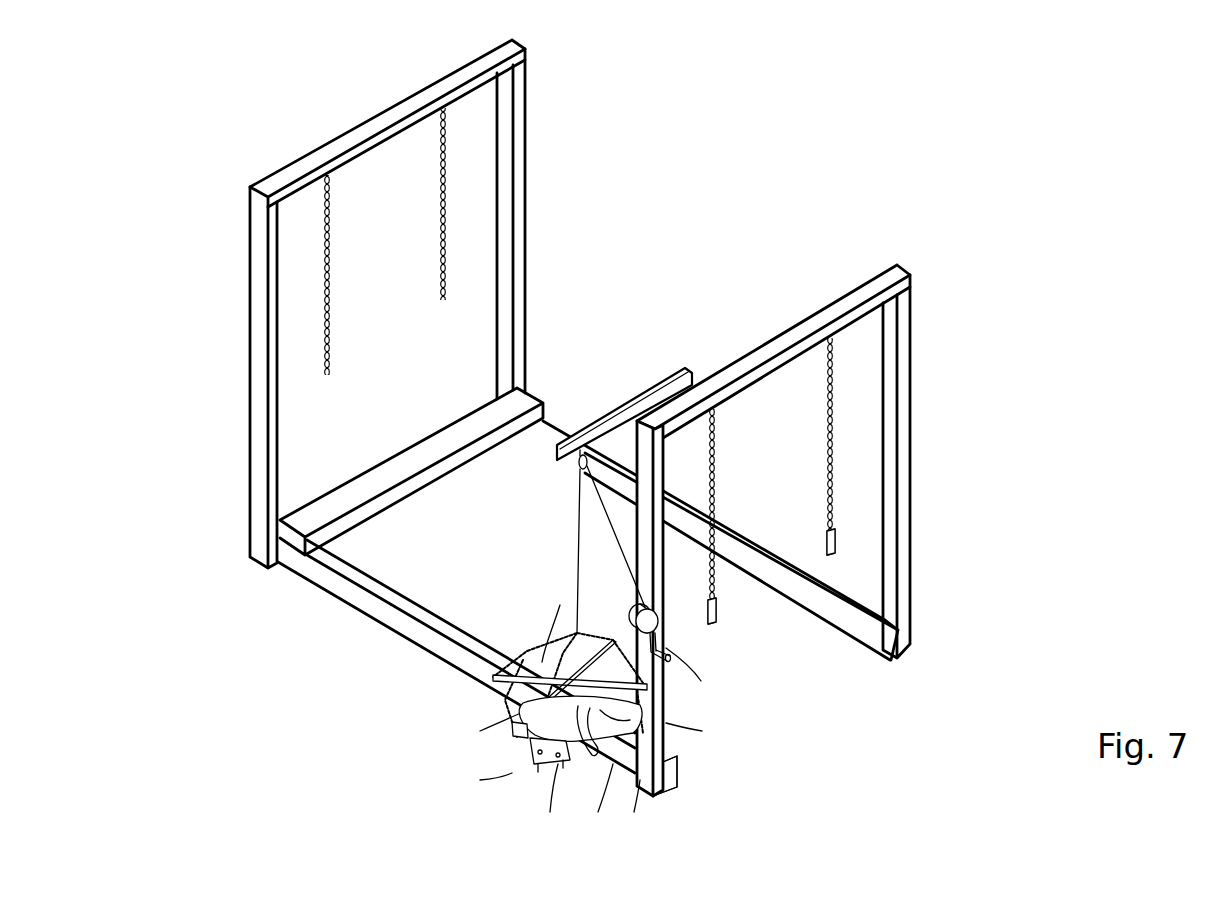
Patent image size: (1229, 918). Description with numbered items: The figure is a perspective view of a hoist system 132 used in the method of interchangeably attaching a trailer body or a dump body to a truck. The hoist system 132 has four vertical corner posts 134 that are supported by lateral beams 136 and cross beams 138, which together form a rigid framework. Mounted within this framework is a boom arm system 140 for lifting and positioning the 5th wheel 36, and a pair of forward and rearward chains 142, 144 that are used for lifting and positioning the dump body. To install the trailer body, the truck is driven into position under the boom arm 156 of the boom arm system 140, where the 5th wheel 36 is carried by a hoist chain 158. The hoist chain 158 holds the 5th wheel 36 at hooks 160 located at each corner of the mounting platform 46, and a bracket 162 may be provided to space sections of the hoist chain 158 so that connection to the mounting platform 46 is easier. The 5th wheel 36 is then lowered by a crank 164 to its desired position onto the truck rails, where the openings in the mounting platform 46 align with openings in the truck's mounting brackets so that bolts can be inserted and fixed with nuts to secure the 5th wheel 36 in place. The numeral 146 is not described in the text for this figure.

The hoist system 132 is at (562, 418).
The vertical corner posts 134 is at (526, 195).
The lateral beams 136 is at (335, 140).
The cross beams 138 is at (740, 537).
The boom arm system 140 is at (573, 659).
The forward chains 142 is at (830, 457).
The rearward chains 144 is at (443, 194).
The chain end tags 146 is at (827, 543).
The boom arm 156 is at (612, 410).
The hoist chain 158 is at (576, 497).
The hooks 160 is at (507, 720).
The bracket 162 is at (542, 660).
The crank 164 is at (670, 660).
The mounting platform 46 is at (560, 772).
The 5th wheel 36 is at (613, 768).